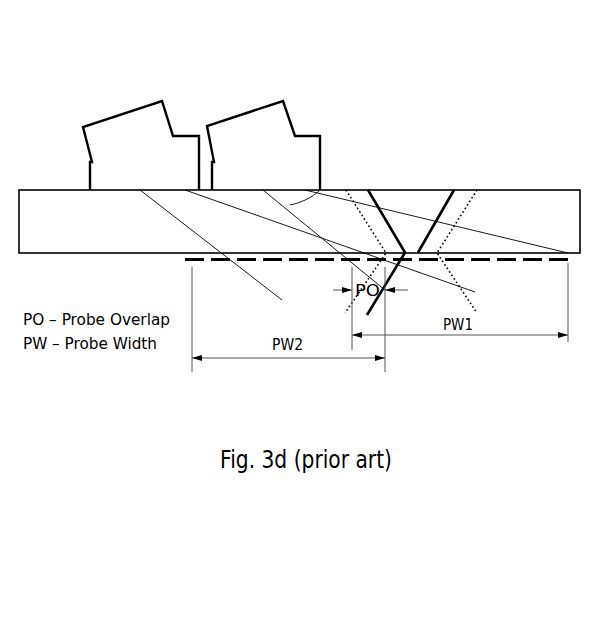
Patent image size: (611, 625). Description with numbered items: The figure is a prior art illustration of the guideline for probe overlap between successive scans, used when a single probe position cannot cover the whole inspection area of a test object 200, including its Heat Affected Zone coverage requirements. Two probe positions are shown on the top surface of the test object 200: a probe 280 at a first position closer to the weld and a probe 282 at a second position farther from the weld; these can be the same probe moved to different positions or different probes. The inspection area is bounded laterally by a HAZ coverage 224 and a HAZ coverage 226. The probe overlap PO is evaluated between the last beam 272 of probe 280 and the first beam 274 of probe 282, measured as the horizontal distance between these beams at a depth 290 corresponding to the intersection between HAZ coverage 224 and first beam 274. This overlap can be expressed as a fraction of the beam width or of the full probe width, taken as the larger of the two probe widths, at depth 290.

The test object 200 is at (538, 210).
The HAZ coverage 224 is at (358, 210).
The HAZ coverage 226 is at (470, 205).
The last beam 272 is at (321, 188).
The first beam 274 is at (189, 255).
The probe 280 is at (242, 112).
The probe 282 is at (168, 117).
The depth 290 is at (280, 262).